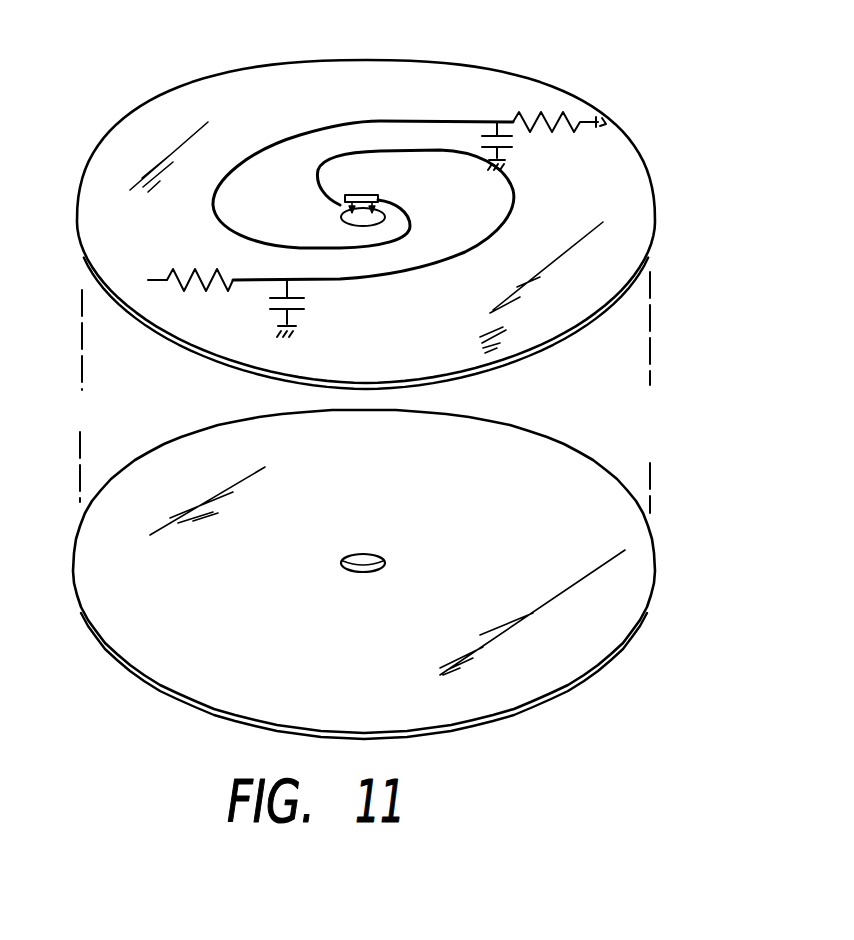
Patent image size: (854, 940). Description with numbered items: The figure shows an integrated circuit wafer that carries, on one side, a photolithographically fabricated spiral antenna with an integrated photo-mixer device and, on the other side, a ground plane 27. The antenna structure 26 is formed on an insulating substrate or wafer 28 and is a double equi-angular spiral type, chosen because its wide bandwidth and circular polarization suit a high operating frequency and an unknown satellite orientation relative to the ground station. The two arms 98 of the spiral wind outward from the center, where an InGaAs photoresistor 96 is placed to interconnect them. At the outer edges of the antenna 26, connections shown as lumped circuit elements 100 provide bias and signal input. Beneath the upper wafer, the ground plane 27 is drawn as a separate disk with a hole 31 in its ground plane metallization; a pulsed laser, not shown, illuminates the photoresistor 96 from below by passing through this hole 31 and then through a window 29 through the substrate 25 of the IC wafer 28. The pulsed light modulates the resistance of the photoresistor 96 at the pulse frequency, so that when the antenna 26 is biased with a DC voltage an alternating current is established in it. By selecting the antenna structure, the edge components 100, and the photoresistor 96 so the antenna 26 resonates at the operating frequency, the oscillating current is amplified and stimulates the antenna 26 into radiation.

The substrate 25 is at (237, 92).
The antenna structure 26 is at (520, 207).
The ground plane 27 is at (563, 462).
The insulating substrate (wafer) 28 is at (647, 167).
The window 29 is at (363, 224).
The hole 31 is at (406, 208).
The InGaAs photoresistor 96 is at (341, 206).
The arms of the spiral 98 is at (464, 176).
The lumped circuit elements 100 is at (541, 111).